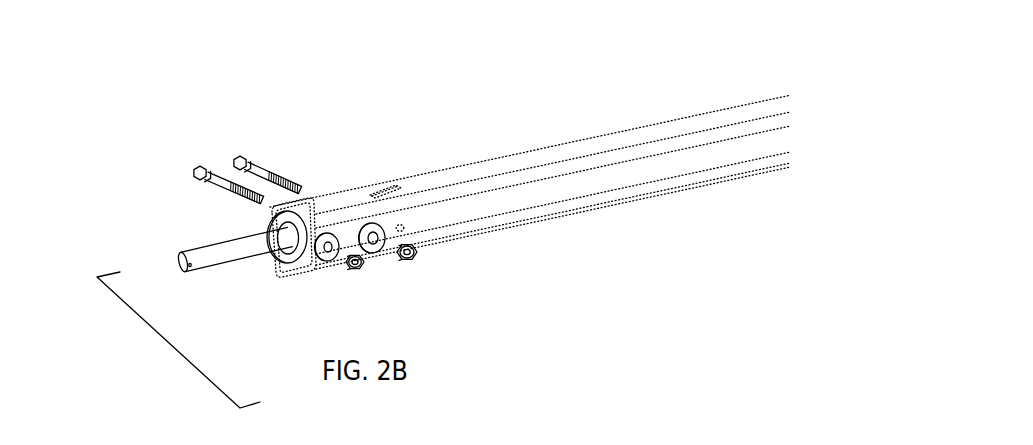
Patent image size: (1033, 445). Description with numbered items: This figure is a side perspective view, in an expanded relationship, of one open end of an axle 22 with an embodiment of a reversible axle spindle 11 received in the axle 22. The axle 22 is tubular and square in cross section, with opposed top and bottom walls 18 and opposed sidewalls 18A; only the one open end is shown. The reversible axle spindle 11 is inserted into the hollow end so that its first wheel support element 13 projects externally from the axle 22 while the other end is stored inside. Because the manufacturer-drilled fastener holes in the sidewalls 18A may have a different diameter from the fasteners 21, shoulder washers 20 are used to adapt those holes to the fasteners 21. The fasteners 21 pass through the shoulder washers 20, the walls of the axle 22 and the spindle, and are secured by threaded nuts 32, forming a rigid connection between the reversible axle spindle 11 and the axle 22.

The reversible axle spindle 11 is at (208, 299).
The first wheel support element 13 is at (212, 249).
The top and bottom walls 18 is at (316, 197).
The sidewalls 18A is at (268, 219).
The shoulder washers 20 is at (380, 250).
The fasteners 21 is at (253, 165).
The axle 22 is at (600, 243).
The threaded nuts 32 is at (414, 255).